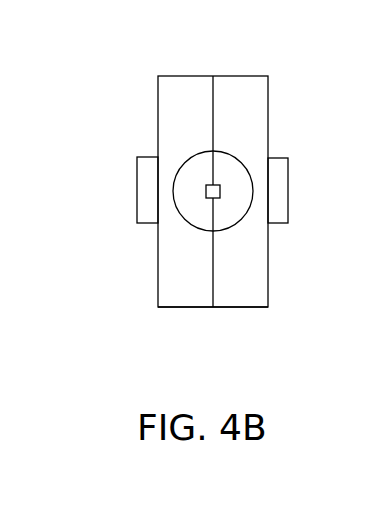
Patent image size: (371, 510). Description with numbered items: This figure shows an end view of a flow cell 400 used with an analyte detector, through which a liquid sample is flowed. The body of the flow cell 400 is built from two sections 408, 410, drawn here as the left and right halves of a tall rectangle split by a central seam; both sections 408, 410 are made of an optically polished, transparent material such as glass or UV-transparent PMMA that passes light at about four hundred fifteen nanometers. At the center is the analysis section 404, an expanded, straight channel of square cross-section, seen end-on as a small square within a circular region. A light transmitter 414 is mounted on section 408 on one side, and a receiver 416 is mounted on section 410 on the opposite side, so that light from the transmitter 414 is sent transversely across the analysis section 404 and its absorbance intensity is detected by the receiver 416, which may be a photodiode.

The flow cell 400 is at (188, 76).
The analysis section 404 is at (220, 191).
The section 408 is at (180, 308).
The section 410 is at (245, 308).
The light transmitter 414 is at (150, 224).
The receiver 416 is at (280, 224).